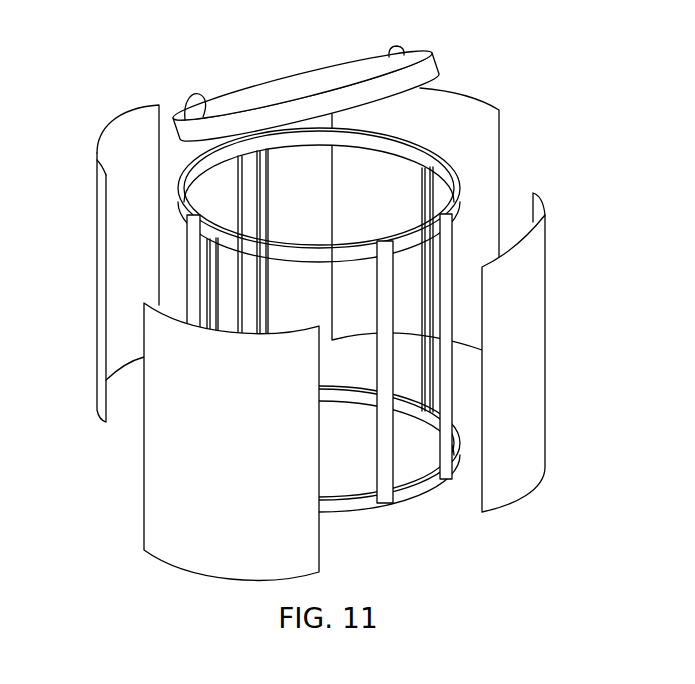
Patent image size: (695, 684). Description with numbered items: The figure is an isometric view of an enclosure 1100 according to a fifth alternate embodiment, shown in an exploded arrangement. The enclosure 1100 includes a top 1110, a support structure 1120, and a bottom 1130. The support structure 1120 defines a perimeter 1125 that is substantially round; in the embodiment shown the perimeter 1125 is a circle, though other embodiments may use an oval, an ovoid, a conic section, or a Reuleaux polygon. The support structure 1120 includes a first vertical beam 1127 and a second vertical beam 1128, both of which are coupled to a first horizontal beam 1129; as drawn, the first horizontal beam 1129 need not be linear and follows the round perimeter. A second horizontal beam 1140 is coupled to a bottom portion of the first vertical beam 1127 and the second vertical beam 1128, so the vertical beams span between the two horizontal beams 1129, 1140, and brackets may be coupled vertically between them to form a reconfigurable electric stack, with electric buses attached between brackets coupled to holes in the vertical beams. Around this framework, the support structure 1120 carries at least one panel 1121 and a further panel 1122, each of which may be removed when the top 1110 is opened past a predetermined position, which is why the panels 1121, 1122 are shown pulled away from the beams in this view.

The enclosure 1100 is at (108, 69).
The top 1110 is at (290, 85).
The support structure 1120 is at (344, 365).
The panel 1121 is at (157, 498).
The panel 1122 is at (535, 377).
The perimeter 1125 is at (181, 244).
The first vertical beam 1127 is at (197, 281).
The second vertical beam 1128 is at (437, 383).
The first horizontal beam 1129 is at (293, 250).
The bottom 1130 is at (320, 346).
The second horizontal beam 1140 is at (343, 505).